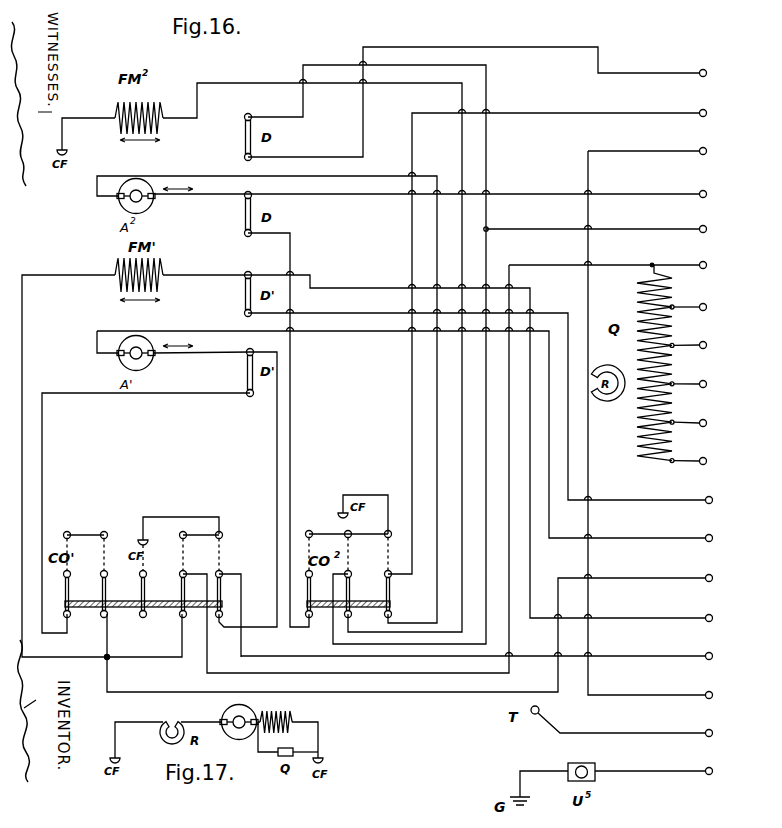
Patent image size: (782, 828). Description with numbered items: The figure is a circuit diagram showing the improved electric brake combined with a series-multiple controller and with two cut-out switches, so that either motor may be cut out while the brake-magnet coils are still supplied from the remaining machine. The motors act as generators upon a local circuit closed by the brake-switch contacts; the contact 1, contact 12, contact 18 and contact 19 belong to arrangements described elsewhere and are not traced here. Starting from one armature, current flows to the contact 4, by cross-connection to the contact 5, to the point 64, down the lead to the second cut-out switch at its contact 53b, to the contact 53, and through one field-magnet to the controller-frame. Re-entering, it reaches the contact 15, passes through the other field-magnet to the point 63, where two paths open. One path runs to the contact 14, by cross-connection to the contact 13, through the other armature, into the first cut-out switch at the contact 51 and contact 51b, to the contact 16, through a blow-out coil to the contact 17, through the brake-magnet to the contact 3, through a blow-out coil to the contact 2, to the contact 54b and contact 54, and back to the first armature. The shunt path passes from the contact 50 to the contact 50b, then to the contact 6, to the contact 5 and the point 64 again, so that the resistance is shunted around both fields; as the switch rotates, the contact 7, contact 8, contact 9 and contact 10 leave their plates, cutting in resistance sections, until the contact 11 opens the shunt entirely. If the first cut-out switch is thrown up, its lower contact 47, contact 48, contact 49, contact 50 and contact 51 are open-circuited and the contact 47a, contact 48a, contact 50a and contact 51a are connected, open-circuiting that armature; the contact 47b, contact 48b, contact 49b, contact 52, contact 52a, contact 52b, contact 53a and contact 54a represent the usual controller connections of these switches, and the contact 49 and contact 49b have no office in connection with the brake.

The contact 1 is at (711, 71).
The contact 2 is at (711, 111).
The contact 3 is at (711, 149).
The contact 4 is at (711, 192).
The contact 5 is at (711, 227).
The contact 6 is at (711, 263).
The contact 7 is at (711, 305).
The contact 8 is at (711, 343).
The contact 9 is at (711, 382).
The contact 10 is at (715, 421).
The contact 11 is at (715, 459).
The contact 12 is at (720, 498).
The contact 13 is at (720, 536).
The contact 14 is at (720, 576).
The contact 15 is at (720, 616).
The contact 16 is at (720, 654).
The contact 17 is at (721, 693).
The contact 18 is at (720, 731).
The contact 19 is at (720, 769).
The contact 47 is at (75, 606).
The contact 47a is at (65, 543).
The contact 47b is at (78, 568).
The contact 48 is at (114, 605).
The contact 48a is at (102, 543).
The contact 48b is at (115, 568).
The contact 49 is at (150, 605).
The contact 49b is at (155, 561).
The contact 50 is at (190, 606).
The contact 50a is at (181, 544).
The contact 50b is at (192, 566).
The contact 51 is at (228, 600).
The contact 51a is at (231, 547).
The contact 51b is at (229, 566).
The contact 52 is at (317, 606).
The contact 52a is at (308, 543).
The contact 52b is at (320, 568).
The contact 53 is at (356, 605).
The contact 53a is at (359, 544).
The contact 53b is at (360, 569).
The contact 54 is at (398, 600).
The contact 54a is at (400, 545).
The contact 54b is at (400, 567).
The point 63 is at (108, 659).
The point 64 is at (494, 221).